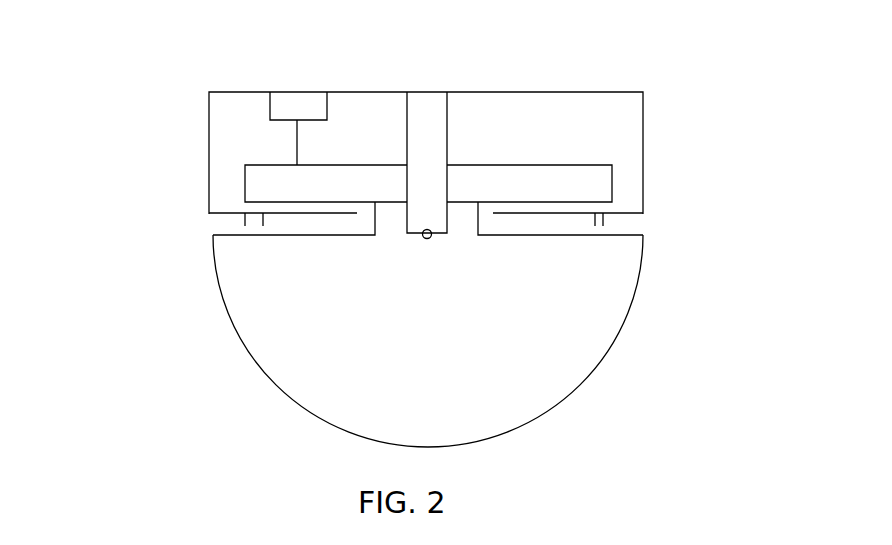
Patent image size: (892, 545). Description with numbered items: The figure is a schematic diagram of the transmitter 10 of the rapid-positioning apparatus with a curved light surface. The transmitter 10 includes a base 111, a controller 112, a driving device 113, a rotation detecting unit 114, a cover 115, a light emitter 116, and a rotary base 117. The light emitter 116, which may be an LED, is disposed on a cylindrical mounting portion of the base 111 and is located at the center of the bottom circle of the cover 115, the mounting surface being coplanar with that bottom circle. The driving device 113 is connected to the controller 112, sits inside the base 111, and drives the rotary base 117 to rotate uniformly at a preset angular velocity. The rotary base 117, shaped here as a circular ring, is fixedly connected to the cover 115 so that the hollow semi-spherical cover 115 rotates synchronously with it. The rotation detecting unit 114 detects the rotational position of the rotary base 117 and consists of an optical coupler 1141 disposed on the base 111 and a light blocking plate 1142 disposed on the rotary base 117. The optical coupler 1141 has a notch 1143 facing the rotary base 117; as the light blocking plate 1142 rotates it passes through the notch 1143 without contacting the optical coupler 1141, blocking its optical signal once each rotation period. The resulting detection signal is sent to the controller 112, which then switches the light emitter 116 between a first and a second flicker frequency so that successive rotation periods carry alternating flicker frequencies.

The transmitter 10 is at (674, 92).
The base 111 is at (644, 150).
The controller 112 is at (269, 110).
The driving device 113 is at (244, 181).
The rotation detecting unit 114 is at (107, 200).
The optical coupler 1141 is at (245, 202).
The light blocking plate 1142 is at (246, 222).
The notch 1143 is at (255, 219).
The cover 115 is at (257, 363).
The light emitter 116 is at (430, 236).
The rotary base 117 is at (597, 234).